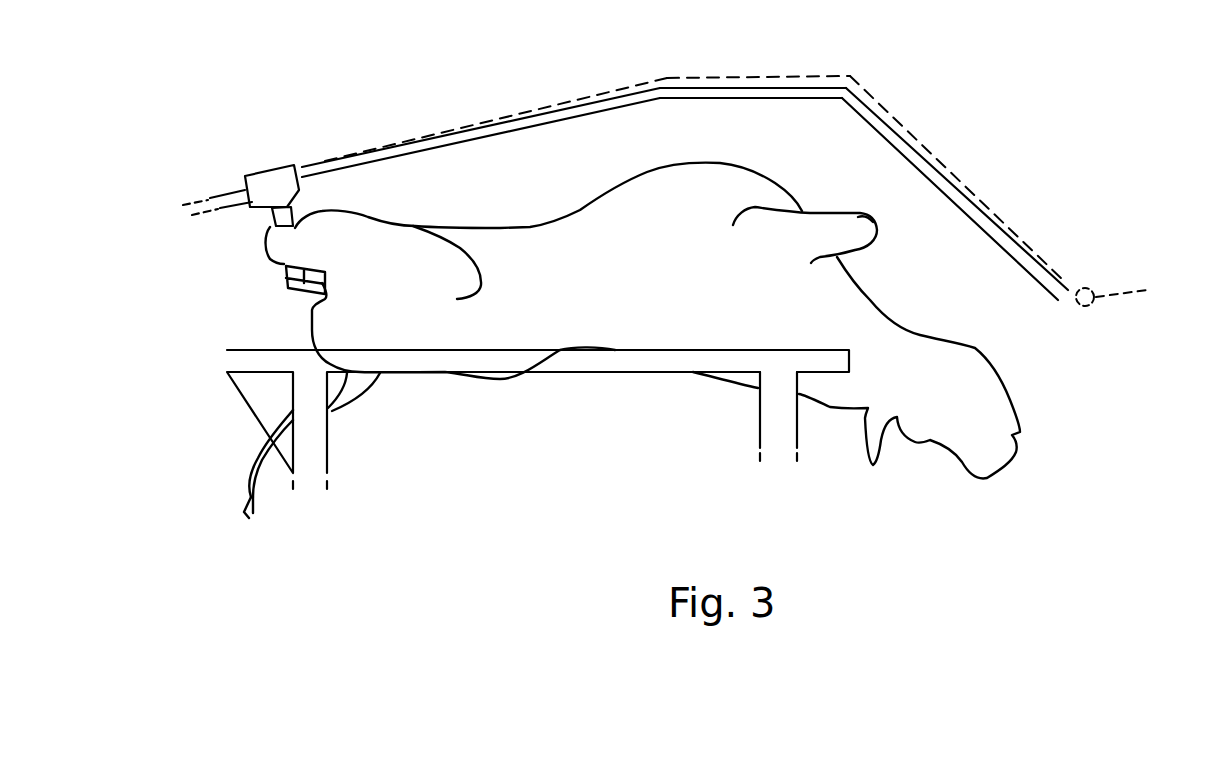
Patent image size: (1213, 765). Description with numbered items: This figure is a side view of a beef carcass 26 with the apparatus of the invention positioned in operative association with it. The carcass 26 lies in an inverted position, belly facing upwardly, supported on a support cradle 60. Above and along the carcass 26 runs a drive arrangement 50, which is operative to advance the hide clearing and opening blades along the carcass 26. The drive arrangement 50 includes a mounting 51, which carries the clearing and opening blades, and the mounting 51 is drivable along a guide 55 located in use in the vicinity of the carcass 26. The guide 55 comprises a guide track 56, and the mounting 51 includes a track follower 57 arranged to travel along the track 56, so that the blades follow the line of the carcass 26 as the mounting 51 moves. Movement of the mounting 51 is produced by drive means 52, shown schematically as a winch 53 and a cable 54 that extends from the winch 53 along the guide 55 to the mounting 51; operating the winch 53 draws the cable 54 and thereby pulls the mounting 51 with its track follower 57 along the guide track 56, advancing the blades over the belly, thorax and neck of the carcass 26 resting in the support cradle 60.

The carcass 26 is at (635, 318).
The drive arrangement 50 is at (216, 182).
The mounting 51 is at (266, 219).
The drive means 52 is at (1073, 269).
The winch 53 is at (1138, 279).
The cable 54 is at (940, 162).
The guide 55 is at (727, 108).
The guide track 56 is at (603, 108).
The track follower 57 is at (285, 177).
The support cradle 60 is at (775, 396).